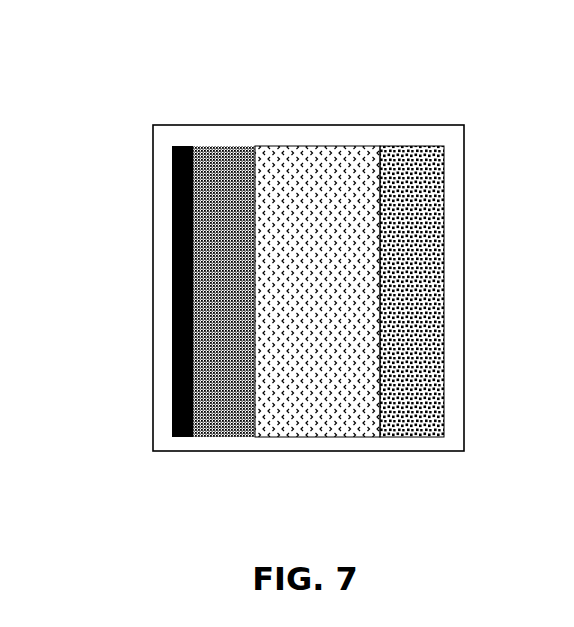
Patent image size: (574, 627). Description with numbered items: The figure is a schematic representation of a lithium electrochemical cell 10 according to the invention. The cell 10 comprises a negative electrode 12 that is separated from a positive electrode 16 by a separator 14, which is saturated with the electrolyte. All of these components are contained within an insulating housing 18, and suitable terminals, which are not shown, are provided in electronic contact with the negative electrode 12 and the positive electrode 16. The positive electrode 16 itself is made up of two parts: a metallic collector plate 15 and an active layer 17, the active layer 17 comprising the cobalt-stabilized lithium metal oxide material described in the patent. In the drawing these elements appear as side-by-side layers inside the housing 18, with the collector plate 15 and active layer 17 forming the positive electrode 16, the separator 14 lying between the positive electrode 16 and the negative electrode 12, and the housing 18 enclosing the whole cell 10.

The lithium electrochemical cell 10 is at (99, 266).
The negative electrode 12 is at (421, 163).
The separator 14 is at (297, 170).
The metallic collector plate 15 is at (172, 146).
The positive electrode 16 is at (213, 135).
The active layer 17 is at (235, 167).
The insulating housing 18 is at (464, 187).